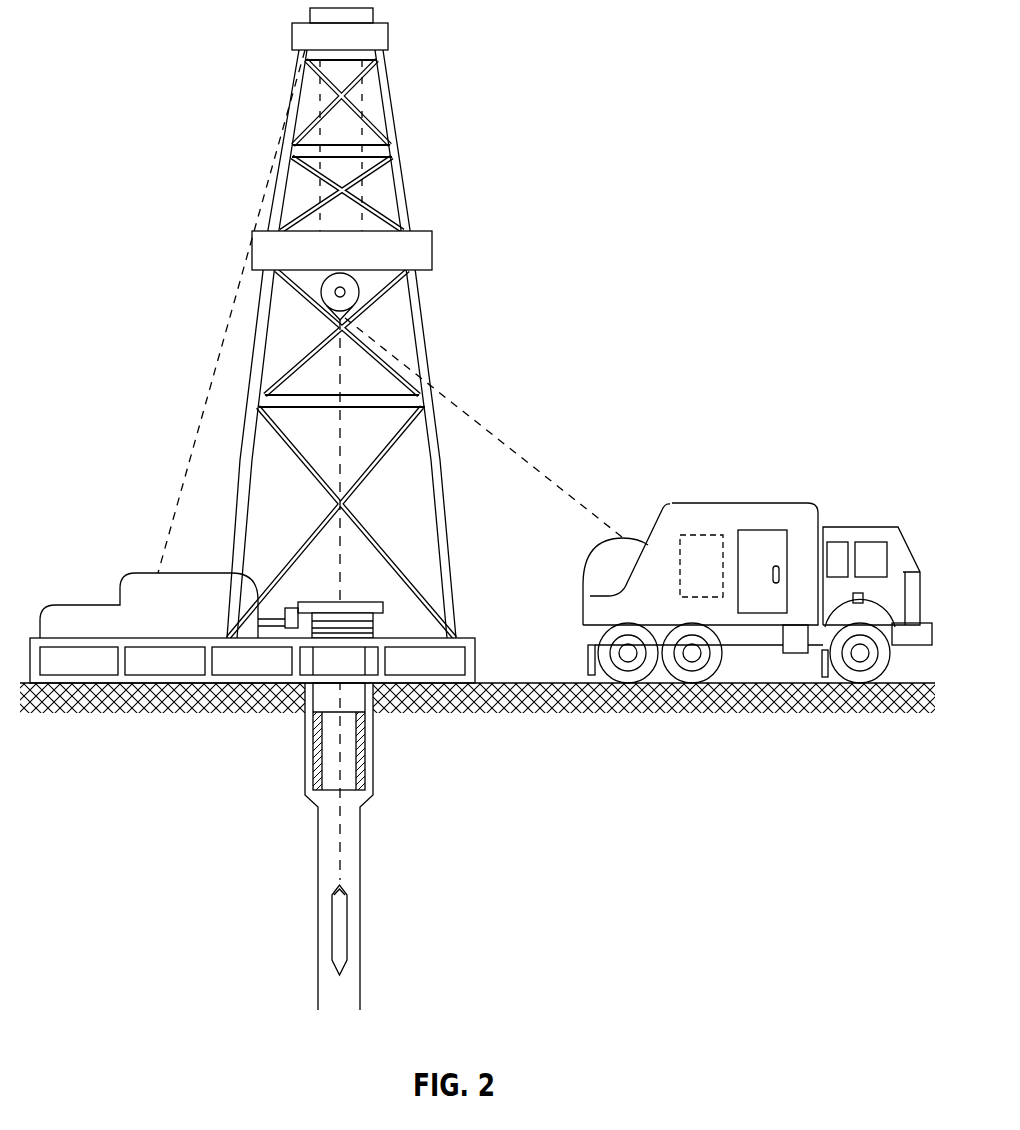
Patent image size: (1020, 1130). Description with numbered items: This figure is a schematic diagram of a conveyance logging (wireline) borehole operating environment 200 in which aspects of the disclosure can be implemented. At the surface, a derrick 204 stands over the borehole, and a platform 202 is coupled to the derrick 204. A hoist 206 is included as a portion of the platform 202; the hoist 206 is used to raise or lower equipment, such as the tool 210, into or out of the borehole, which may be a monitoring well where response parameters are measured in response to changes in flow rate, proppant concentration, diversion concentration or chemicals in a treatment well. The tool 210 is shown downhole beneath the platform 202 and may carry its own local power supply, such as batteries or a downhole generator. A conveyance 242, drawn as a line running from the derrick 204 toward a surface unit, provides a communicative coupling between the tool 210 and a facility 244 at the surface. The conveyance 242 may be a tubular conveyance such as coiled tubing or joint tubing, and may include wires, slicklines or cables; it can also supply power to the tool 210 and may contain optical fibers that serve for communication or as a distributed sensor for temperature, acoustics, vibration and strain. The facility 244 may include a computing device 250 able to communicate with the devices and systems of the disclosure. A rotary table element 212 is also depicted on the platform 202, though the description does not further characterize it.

The conveyance logging borehole operating environment 200 is at (217, 105).
The platform 202 is at (478, 663).
The derrick 204 is at (460, 592).
The hoist 206 is at (360, 297).
The tool 210 is at (331, 928).
The rotary table 212 is at (355, 601).
The conveyance 242 is at (509, 444).
The facility 244 is at (762, 530).
The computing device 250 is at (706, 535).